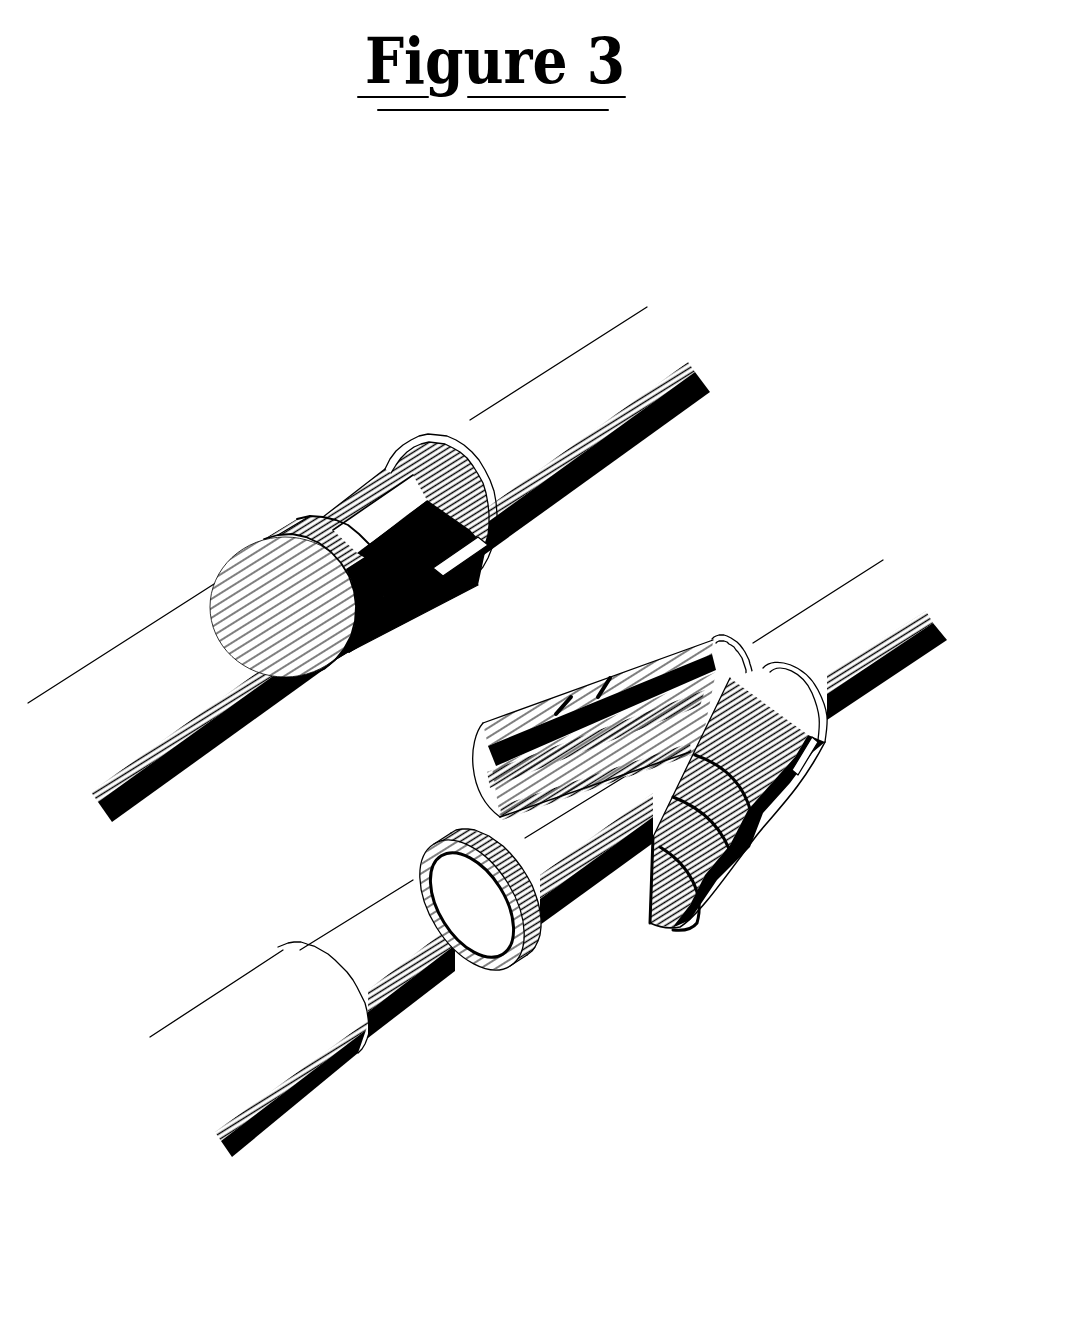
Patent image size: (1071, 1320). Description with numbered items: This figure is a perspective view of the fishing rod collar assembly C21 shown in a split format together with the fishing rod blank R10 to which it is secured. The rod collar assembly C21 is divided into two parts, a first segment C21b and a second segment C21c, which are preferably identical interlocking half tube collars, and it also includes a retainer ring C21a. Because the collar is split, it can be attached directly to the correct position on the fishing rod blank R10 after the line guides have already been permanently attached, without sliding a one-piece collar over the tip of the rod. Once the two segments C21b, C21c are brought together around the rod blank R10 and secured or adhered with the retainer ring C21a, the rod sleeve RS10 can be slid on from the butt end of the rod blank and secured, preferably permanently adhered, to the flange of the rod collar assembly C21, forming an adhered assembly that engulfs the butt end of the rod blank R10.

The fishing rod blank R10 is at (708, 473).
The rod sleeve RS10 is at (99, 625).
The rod collar assembly C21 is at (315, 450).
The retainer ring C21a is at (550, 992).
The first segment C21b is at (622, 653).
The second segment C21c is at (773, 860).